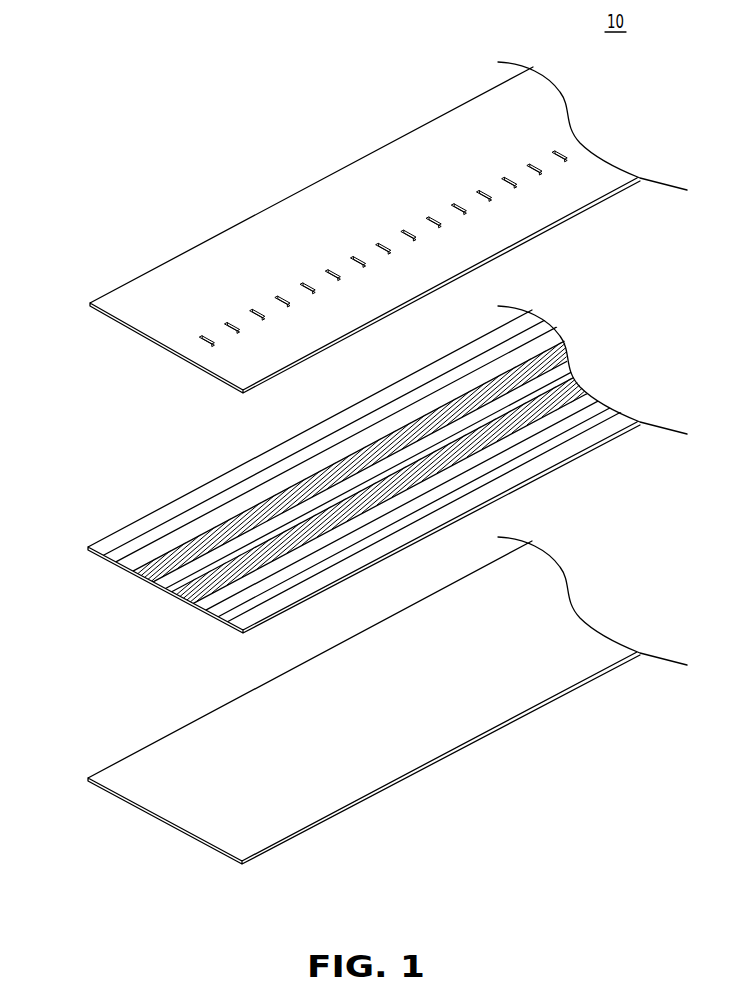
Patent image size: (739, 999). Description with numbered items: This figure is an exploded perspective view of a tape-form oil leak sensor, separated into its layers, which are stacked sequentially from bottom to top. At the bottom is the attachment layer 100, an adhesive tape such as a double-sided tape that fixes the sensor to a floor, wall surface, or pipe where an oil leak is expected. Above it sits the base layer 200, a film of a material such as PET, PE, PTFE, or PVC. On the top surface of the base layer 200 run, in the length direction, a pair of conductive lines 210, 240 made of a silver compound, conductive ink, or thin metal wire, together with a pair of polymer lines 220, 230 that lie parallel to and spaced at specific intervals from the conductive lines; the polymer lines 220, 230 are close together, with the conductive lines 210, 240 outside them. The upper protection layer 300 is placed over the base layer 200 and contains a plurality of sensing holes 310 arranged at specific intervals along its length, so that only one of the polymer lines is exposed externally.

The attachment layer 100 is at (190, 820).
The base layer 200 is at (359, 466).
The conductive line 210 is at (218, 617).
The polymer line 220 is at (178, 597).
The polymer line 230 is at (143, 577).
The conductive line 240 is at (107, 555).
The upper protection layer 300 is at (367, 241).
The sensing holes 310 is at (210, 347).